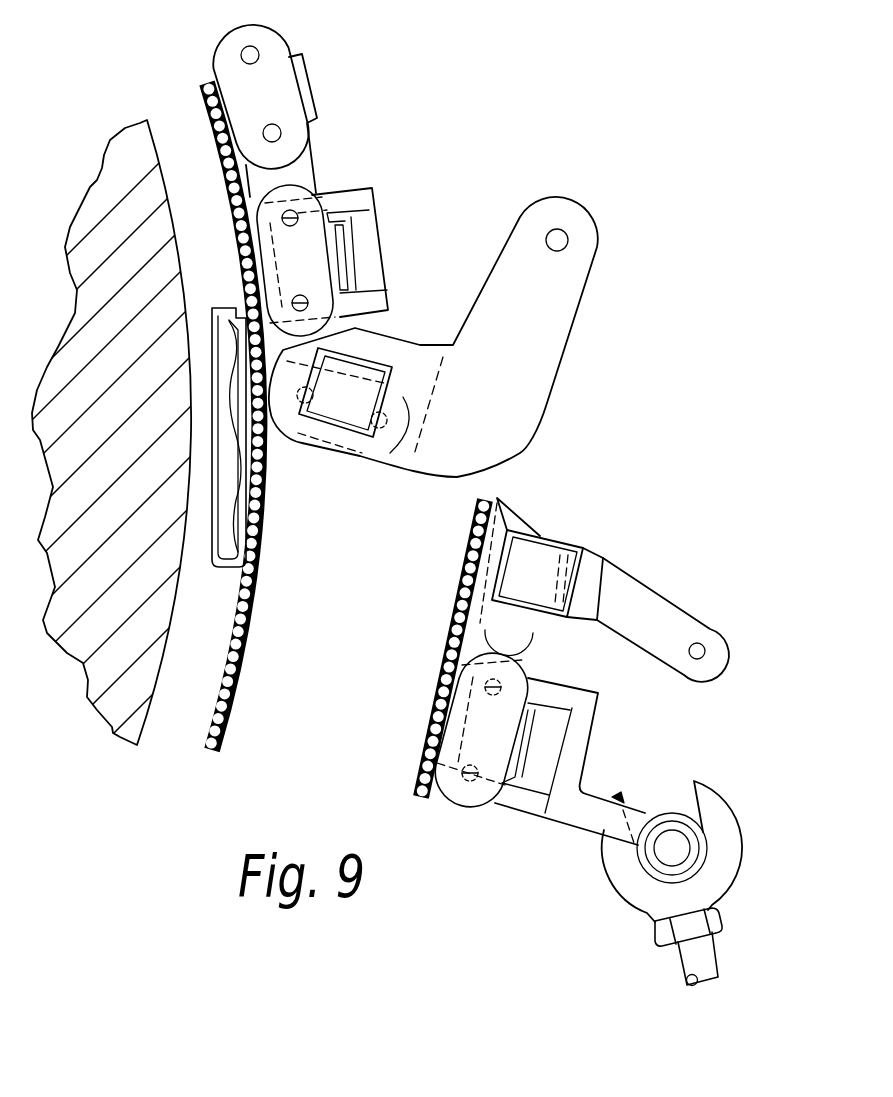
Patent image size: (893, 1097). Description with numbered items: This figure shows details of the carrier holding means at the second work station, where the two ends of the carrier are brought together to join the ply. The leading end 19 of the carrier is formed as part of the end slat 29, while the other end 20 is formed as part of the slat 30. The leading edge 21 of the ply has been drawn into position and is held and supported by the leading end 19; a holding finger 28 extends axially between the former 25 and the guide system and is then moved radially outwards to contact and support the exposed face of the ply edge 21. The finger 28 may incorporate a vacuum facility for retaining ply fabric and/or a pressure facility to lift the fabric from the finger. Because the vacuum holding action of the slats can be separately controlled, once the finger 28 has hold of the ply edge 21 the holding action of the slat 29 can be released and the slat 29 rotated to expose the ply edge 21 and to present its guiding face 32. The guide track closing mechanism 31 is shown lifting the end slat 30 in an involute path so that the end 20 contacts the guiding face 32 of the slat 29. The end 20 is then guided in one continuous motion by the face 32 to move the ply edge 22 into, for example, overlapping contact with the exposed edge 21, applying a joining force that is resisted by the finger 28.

The leading end of carrier 19 is at (360, 456).
The end of carrier 20 is at (512, 503).
The leading edge of ply 21 is at (264, 506).
The ply edge 22 is at (483, 498).
The former 25 is at (100, 243).
The holding finger 28 is at (214, 560).
The end slat 29 is at (393, 350).
The slat 30 is at (543, 634).
The guide track closing mechanism 31 is at (716, 872).
The guiding face 32 is at (358, 458).